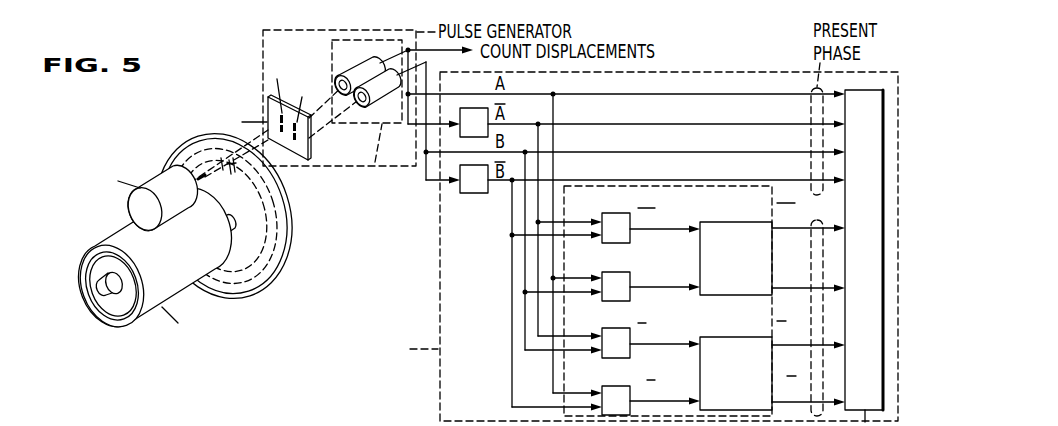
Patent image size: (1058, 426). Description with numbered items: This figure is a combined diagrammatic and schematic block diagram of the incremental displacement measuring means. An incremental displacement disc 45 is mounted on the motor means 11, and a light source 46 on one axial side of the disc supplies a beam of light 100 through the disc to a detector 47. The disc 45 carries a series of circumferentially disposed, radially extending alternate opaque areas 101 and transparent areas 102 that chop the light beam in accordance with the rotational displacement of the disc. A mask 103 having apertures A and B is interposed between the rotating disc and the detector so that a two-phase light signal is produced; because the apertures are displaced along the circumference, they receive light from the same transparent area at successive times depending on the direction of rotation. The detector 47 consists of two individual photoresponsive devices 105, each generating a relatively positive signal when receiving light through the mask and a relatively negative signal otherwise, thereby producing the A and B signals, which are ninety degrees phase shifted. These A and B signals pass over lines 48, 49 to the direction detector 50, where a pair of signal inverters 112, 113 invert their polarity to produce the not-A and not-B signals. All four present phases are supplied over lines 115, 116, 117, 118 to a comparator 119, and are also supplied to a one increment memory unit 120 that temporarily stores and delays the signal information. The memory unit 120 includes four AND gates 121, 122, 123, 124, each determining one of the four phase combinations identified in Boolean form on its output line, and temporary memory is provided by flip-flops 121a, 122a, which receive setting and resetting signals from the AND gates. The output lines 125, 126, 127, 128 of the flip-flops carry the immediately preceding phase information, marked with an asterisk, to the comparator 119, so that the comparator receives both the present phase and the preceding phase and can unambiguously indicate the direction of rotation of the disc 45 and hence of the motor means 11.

The motor means 11 is at (176, 267).
The incremental displacement disc 45 is at (291, 247).
The light source 46 is at (132, 205).
The detector 47 is at (368, 123).
The line 48 is at (426, 60).
The line 49 is at (408, 105).
The direction detector 50 is at (438, 389).
The beam of light 100 is at (200, 183).
The opaque areas 101 is at (218, 158).
The transparent areas 102 is at (231, 175).
The mask 103 is at (310, 140).
The photoresponsive devices 105 is at (366, 75).
The signal inverter 112 is at (465, 108).
The signal inverter 113 is at (473, 193).
The line 115 is at (631, 95).
The line 116 is at (631, 125).
The line 117 is at (631, 153).
The line 118 is at (631, 181).
The comparator 119 is at (872, 406).
The one increment memory unit 120 is at (697, 186).
The AND gate 121 is at (619, 213).
The AND gate 122 is at (603, 272).
The AND gate 123 is at (603, 328).
The AND gate 124 is at (603, 388).
The flip-flop 121a is at (712, 222).
The flip-flop 122a is at (712, 337).
The line 125 is at (805, 236).
The line 126 is at (805, 293).
The line 127 is at (805, 350).
The line 128 is at (805, 407).